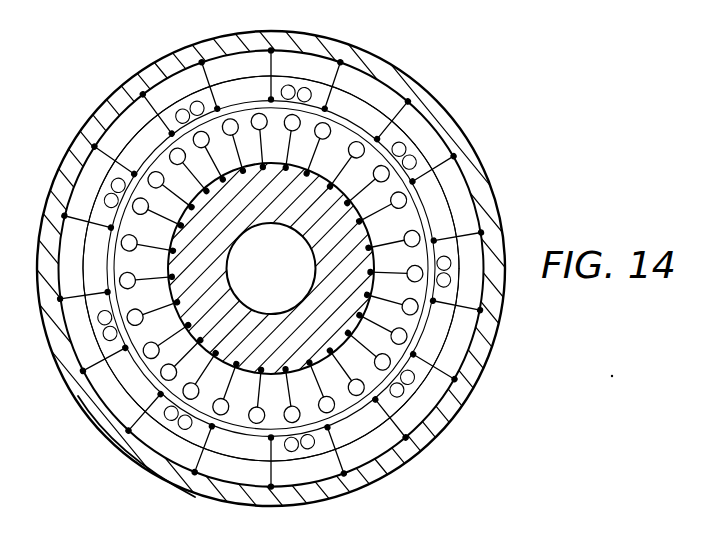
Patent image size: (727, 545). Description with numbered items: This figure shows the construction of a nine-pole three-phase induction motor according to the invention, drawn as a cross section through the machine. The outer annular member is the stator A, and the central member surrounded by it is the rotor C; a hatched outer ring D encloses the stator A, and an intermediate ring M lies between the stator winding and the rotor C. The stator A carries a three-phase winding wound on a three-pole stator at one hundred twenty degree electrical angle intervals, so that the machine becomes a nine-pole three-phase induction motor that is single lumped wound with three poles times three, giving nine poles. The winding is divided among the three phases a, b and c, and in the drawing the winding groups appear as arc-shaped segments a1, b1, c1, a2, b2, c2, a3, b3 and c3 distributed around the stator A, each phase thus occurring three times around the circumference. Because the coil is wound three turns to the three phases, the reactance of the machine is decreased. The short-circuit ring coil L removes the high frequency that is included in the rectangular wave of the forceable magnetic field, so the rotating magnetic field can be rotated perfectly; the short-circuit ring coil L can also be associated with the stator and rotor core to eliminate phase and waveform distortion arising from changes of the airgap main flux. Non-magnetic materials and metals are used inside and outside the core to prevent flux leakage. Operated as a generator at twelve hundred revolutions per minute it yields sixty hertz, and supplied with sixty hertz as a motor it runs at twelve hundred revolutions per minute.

The stator A is at (347, 78).
The rotor C is at (408, 215).
The outer yoke housing D is at (100, 392).
The short-circuit ring coil L is at (208, 78).
The commutator ring M is at (133, 135).
The winding segment a1 is at (362, 120).
The winding segment b1 is at (445, 214).
The winding segment c1 is at (428, 335).
The winding segment a2 is at (352, 430).
The winding segment b2 is at (233, 444).
The winding segment c2 is at (131, 376).
The winding segment a3 is at (94, 255).
The winding segment b3 is at (146, 148).
The winding segment c3 is at (243, 79).